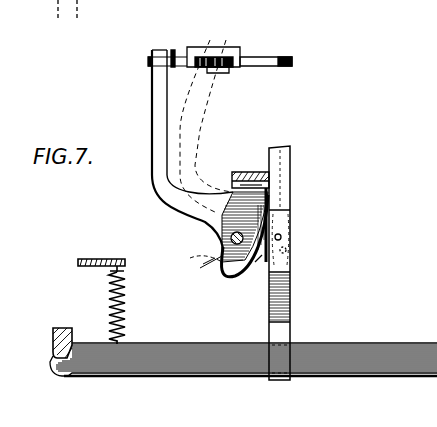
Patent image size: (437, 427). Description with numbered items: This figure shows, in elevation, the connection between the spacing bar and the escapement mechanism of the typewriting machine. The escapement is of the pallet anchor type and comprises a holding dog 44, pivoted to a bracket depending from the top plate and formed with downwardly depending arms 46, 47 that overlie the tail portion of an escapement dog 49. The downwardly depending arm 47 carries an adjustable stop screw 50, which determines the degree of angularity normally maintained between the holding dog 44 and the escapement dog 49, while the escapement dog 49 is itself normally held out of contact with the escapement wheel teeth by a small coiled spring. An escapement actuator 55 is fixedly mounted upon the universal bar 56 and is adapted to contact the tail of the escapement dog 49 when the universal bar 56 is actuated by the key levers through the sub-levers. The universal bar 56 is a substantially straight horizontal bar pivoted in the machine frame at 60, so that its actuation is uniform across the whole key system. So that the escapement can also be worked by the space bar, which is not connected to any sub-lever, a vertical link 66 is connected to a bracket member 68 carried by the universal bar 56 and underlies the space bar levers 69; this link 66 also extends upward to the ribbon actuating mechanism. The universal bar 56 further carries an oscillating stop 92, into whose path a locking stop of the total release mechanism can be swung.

The holding dog 44 is at (173, 55).
The downwardly depending arm 46 is at (188, 67).
The downwardly depending arm 47 is at (238, 67).
The escapement dog 49 is at (292, 62).
The adjustable stop screw 50 is at (243, 60).
The escapement actuator 55 is at (151, 130).
The universal bar 56 is at (250, 173).
The pivot of the universal bar 60 is at (221, 241).
The vertical link 66 is at (288, 263).
The bracket member 68 is at (258, 252).
The space bar lever 69 is at (413, 361).
The oscillating stop 92 is at (198, 265).